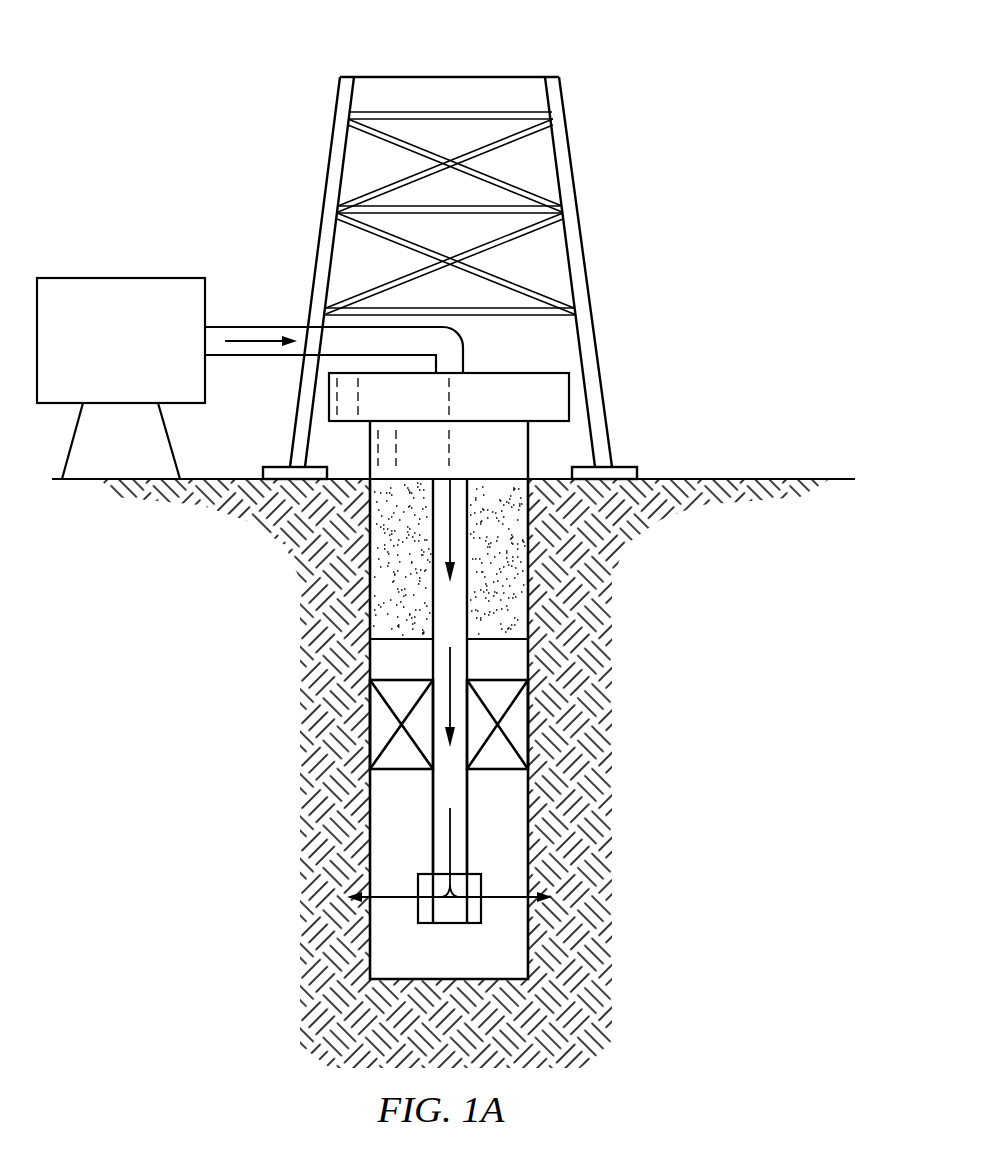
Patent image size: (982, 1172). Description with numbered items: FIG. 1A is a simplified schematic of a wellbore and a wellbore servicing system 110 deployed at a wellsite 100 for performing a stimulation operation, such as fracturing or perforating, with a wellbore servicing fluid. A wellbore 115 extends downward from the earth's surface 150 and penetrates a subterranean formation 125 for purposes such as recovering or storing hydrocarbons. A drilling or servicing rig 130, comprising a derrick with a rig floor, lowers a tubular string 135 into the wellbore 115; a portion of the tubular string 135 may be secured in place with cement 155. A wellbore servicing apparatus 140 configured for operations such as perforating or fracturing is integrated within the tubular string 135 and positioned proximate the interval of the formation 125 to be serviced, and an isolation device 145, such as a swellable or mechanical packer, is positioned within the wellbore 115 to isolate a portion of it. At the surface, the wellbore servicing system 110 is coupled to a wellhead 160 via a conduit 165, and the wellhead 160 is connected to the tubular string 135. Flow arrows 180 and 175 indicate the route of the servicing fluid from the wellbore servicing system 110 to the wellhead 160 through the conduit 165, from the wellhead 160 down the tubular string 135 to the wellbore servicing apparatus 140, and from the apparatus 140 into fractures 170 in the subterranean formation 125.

The wellsite 100 is at (211, 125).
The wellbore servicing system 110 is at (106, 352).
The wellbore 115 is at (382, 830).
The subterranean formation 125 is at (330, 687).
The rig 130 is at (518, 92).
The tubular string 135 is at (430, 783).
The wellbore servicing apparatus 140 is at (482, 880).
The isolation device 145 is at (517, 727).
The earth's surface 150 is at (688, 479).
The cement 155 is at (385, 584).
The wellhead 160 is at (557, 394).
The conduit 165 is at (275, 357).
The fracture 170 is at (348, 908).
The flow arrow 175 is at (450, 658).
The flow arrow 180 is at (220, 338).